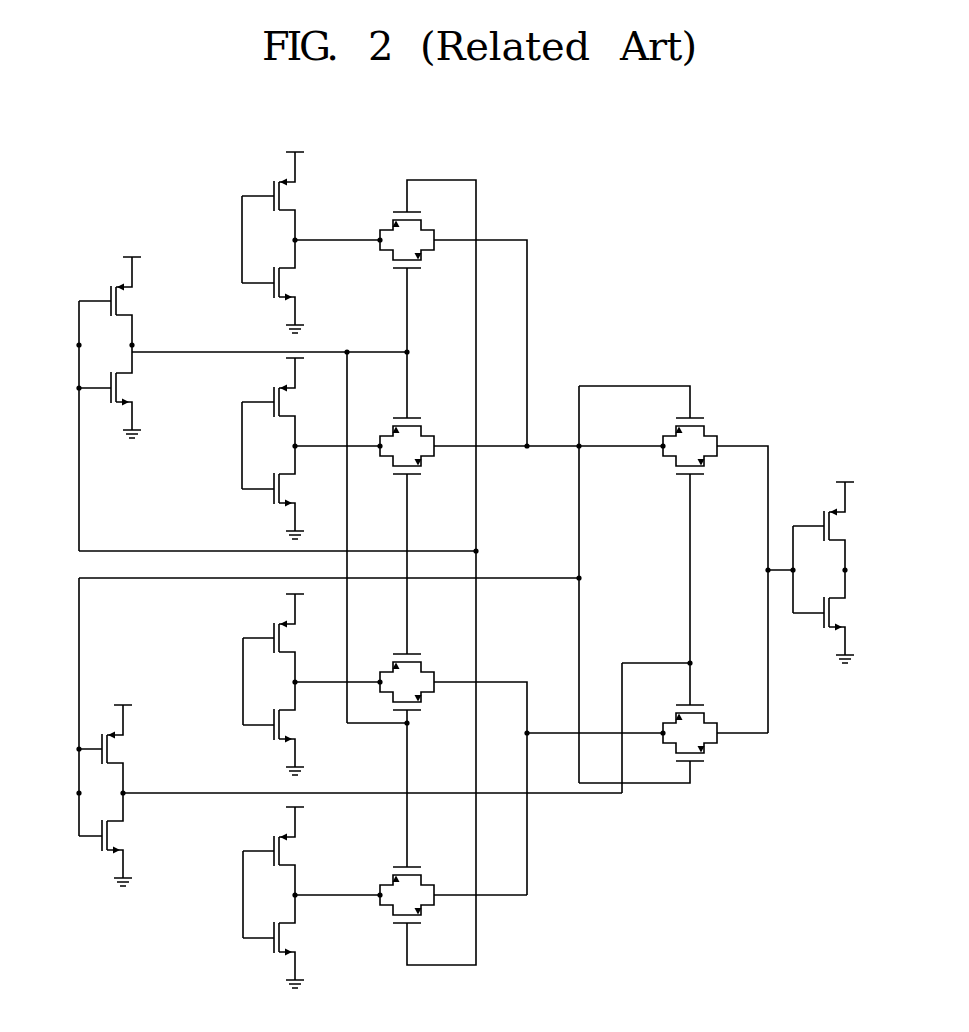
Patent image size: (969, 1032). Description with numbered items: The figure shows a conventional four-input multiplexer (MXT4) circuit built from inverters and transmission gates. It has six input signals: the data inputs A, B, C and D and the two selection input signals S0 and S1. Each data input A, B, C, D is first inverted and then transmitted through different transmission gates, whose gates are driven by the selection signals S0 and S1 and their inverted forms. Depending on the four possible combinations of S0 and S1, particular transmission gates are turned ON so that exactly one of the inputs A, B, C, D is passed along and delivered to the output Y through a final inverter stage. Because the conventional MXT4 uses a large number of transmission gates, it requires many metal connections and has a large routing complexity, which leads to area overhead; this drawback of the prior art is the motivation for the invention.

The selection input signal S0 is at (79, 345).
The selection input signal S1 is at (79, 793).
The input signal A is at (242, 240).
The input signal B is at (242, 446).
The input signal C is at (243, 682).
The input signal D is at (243, 895).
The output Y is at (845, 570).